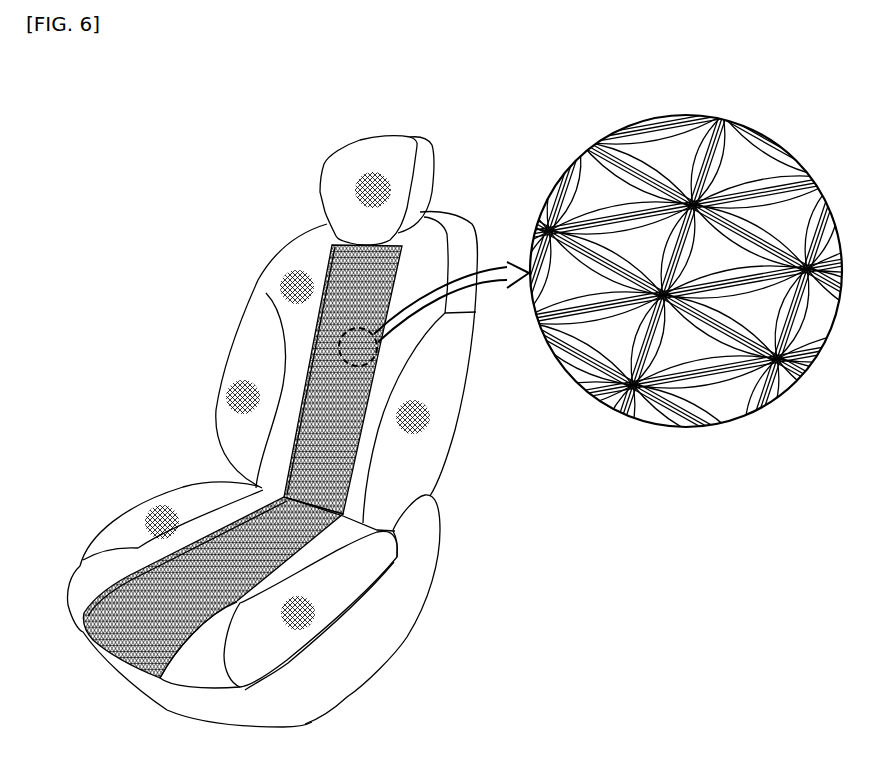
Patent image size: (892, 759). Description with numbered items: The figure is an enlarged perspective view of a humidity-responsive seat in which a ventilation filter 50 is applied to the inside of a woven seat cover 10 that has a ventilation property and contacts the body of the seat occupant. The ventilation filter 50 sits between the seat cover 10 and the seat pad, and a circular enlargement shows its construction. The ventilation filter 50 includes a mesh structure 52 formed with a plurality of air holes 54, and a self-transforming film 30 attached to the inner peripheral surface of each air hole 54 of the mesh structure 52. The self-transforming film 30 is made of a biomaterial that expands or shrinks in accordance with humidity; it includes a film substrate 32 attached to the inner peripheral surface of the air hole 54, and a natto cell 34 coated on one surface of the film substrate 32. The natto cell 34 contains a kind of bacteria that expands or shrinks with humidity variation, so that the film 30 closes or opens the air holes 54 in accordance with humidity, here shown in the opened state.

The seat cover 10 is at (298, 382).
The self-transforming film 30 is at (647, 271).
The film substrate 32 is at (618, 243).
The natto cell 34 is at (636, 238).
The ventilation filter 50 is at (103, 637).
The mesh structure 52 is at (643, 207).
The air hole 54 is at (648, 250).